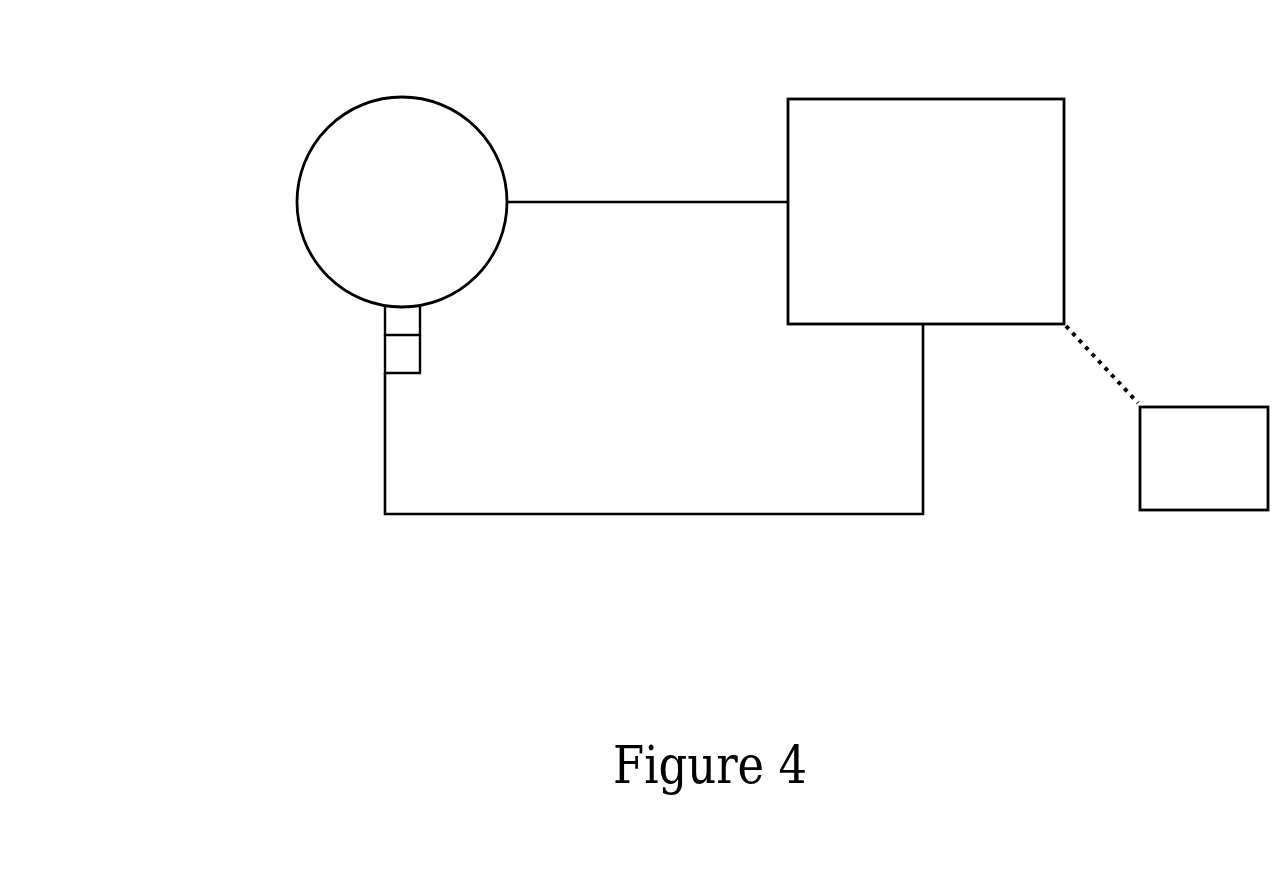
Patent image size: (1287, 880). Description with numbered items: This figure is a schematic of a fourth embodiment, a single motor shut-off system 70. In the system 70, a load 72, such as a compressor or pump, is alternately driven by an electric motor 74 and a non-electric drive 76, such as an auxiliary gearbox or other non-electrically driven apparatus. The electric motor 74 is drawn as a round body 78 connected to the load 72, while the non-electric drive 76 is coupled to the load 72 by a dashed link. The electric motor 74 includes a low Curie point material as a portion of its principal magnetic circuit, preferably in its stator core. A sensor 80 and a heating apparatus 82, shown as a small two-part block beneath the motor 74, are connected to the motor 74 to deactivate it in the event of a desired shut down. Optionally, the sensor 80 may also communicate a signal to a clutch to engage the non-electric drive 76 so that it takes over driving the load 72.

The single motor shut-off system 70 is at (297, 548).
The load 72 is at (1064, 182).
The electric motor 74 is at (268, 263).
The non-electric drive 76 is at (1223, 407).
The spherical body 78 is at (343, 162).
The sensor 80 is at (402, 360).
The heating apparatus 82 is at (398, 320).